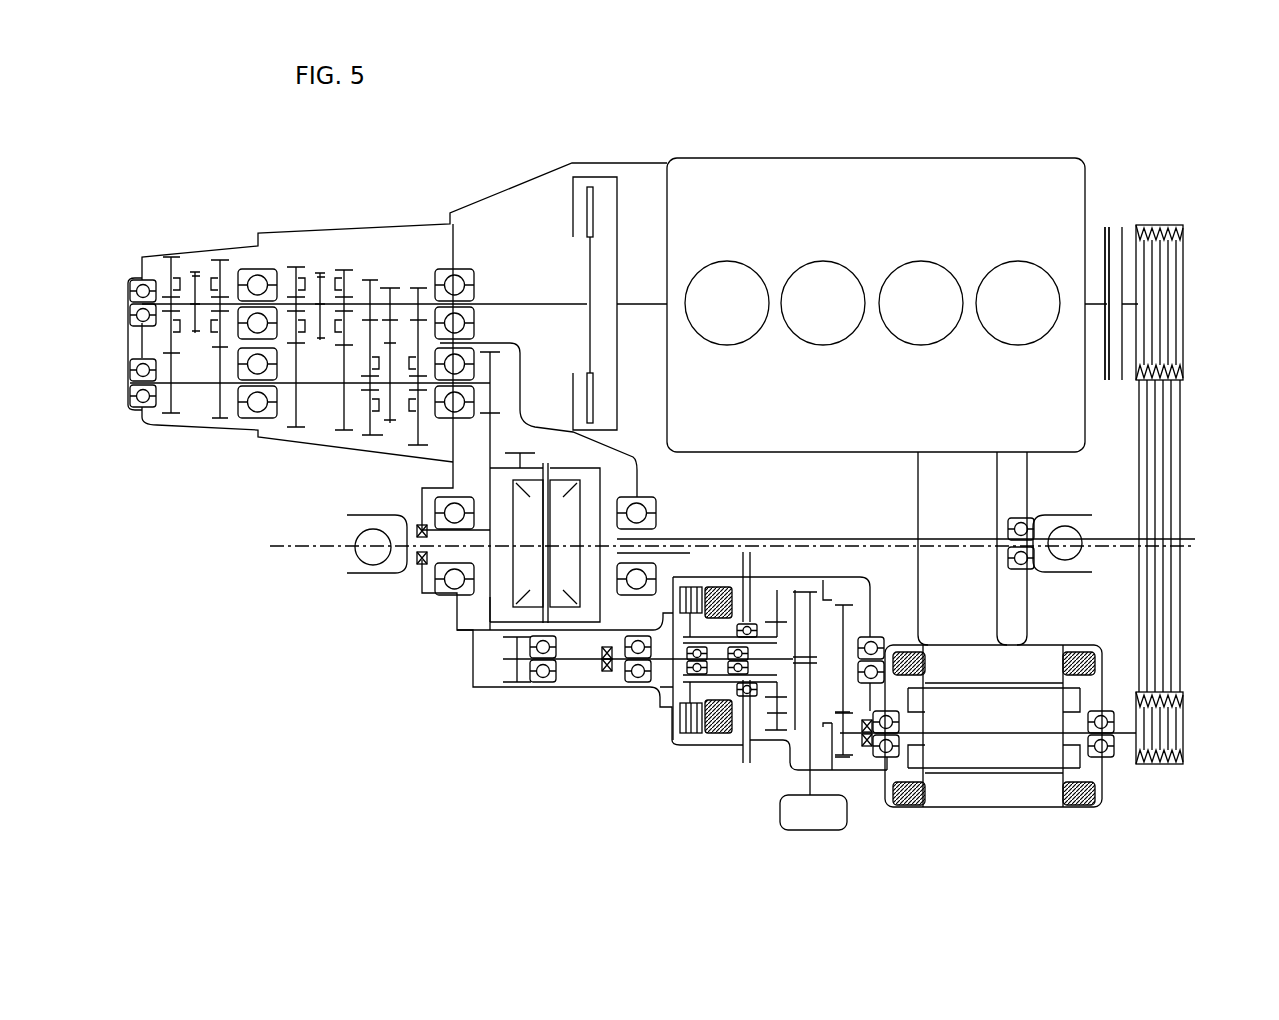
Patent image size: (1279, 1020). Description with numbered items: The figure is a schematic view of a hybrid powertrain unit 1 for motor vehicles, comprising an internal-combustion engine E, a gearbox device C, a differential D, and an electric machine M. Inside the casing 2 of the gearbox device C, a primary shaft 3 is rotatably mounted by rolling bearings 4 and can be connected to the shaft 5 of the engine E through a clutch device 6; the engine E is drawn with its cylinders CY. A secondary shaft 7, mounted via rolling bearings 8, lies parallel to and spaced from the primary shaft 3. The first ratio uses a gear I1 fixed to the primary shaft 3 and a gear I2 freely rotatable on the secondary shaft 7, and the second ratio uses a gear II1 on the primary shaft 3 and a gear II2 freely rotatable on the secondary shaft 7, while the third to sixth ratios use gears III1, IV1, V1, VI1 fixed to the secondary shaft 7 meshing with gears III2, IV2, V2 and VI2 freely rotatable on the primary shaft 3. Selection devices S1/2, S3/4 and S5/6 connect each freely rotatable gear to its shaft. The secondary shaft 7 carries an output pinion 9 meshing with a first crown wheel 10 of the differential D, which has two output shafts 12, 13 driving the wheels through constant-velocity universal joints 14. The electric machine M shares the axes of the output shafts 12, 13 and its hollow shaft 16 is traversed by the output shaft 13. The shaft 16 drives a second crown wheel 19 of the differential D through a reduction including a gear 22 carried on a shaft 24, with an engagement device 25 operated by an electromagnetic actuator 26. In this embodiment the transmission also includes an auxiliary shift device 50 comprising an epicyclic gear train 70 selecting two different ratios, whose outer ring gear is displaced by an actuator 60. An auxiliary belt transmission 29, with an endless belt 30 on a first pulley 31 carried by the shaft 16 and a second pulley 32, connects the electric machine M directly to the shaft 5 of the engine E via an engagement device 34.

The hybrid powertrain unit 1 is at (188, 178).
The casing 2 is at (436, 222).
The primary shaft 3 is at (544, 300).
The rolling bearings 4 is at (142, 292).
The shaft of the engine 5 is at (636, 300).
The clutch device 6 is at (617, 220).
The secondary shaft 7 is at (190, 392).
The rolling bearings 8 is at (135, 402).
The output pinion 9 is at (493, 372).
The first crown wheel 10 is at (495, 430).
The output shaft 12 is at (440, 547).
The output shaft 13 is at (895, 523).
The constant-velocity universal joints 14 is at (375, 555).
The shaft of the electric machine 16 is at (960, 733).
The second crown wheel 19 is at (522, 462).
The gear 22 is at (510, 665).
The shaft 24 is at (570, 688).
The engagement device 25 is at (690, 740).
The electromagnetic actuator 26 is at (718, 730).
The auxiliary belt transmission 29 is at (1205, 483).
The endless belt 30 is at (1175, 410).
The first pulley 31 is at (1160, 760).
The second pulley 32 is at (1165, 270).
The engagement device 34 is at (1110, 230).
The auxiliary shift device 50 is at (770, 755).
The actuator 60 is at (835, 822).
The epicyclic gear train 70 is at (763, 612).
The gearbox device C is at (127, 323).
The differential D is at (483, 602).
The internal-combustion engine E is at (1088, 178).
The electric machine M is at (1005, 808).
The cylinder CY is at (790, 268).
The gear VI2 is at (165, 270).
The gear VI1 is at (168, 420).
The gear V2 is at (223, 275).
The gear V1 is at (219, 420).
The gear IV2 is at (300, 263).
The gear IV1 is at (298, 357).
The gear III2 is at (345, 266).
The gear III1 is at (337, 421).
The gear II1 is at (375, 283).
The gear II2 is at (367, 442).
The gear I1 is at (420, 288).
The gear I2 is at (405, 443).